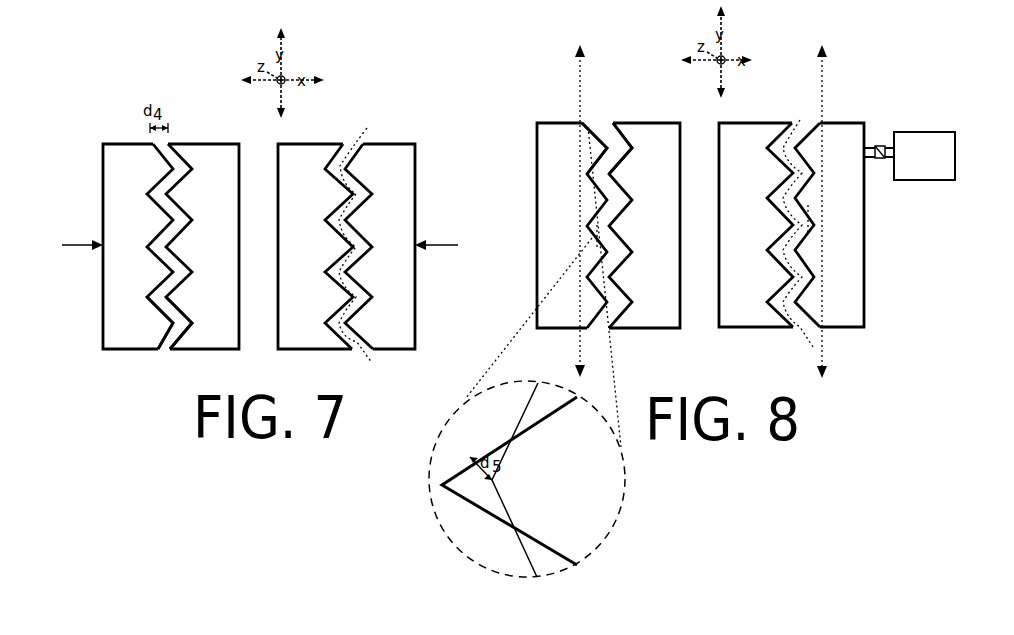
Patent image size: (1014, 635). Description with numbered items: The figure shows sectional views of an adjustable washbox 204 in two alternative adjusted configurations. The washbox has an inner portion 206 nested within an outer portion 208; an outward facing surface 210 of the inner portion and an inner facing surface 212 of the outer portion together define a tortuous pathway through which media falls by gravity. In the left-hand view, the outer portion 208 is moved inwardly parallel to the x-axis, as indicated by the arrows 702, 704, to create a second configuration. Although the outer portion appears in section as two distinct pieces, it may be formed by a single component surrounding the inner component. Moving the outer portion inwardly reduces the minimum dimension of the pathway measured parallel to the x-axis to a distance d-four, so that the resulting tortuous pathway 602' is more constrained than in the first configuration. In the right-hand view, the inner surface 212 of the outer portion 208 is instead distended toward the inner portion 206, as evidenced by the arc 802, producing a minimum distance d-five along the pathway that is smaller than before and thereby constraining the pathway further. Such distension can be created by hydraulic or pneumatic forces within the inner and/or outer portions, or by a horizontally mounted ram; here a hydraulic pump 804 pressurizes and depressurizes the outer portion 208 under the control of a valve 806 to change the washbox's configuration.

In FIG. 7, the adjustable washbox 204 is at (104, 114).
In FIG. 8, the adjustable washbox 204 is at (542, 88).
In FIG. 7, the inner portion 206 is at (234, 202).
In FIG. 8, the inner portion 206 is at (669, 182).
In FIG. 7, the outer portion 208 is at (152, 182).
In FIG. 8, the outer portion 208 is at (581, 154).
In FIG. 7, the outward facing surface 210 is at (170, 351).
In FIG. 8, the outward facing surface 210 is at (609, 125).
In FIG. 7, the inner facing surface 212 is at (157, 351).
In FIG. 8, the inner facing surface 212 is at (590, 124).
In FIG. 7, the tortuous pathway 602' is at (361, 238).
In FIG. 7, the arrow 702 is at (72, 235).
In FIG. 7, the arrow 704 is at (445, 235).
In FIG. 8, the arc 802 is at (597, 238).
In FIG. 8, the hydraulic pump 804 is at (944, 166).
In FIG. 8, the valve 806 is at (880, 146).